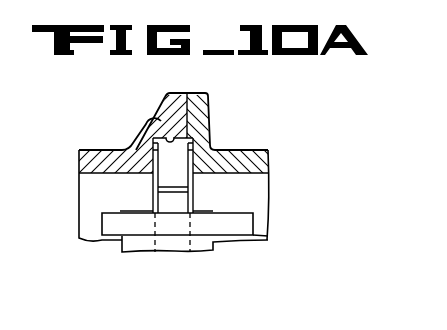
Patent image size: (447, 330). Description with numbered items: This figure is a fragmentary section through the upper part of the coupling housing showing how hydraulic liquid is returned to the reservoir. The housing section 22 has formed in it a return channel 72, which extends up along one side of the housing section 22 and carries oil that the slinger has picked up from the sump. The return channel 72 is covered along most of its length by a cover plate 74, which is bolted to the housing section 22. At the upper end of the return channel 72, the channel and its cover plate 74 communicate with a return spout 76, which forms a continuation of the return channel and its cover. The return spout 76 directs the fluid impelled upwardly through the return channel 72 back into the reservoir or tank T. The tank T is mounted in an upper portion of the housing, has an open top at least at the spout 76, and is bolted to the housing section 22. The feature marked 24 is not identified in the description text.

The housing section 22 is at (176, 93).
The stud 24 is at (195, 93).
The return channel 72 is at (170, 135).
The return spout 76 is at (170, 188).
The cover plate 74 is at (137, 246).
The tank T is at (246, 222).